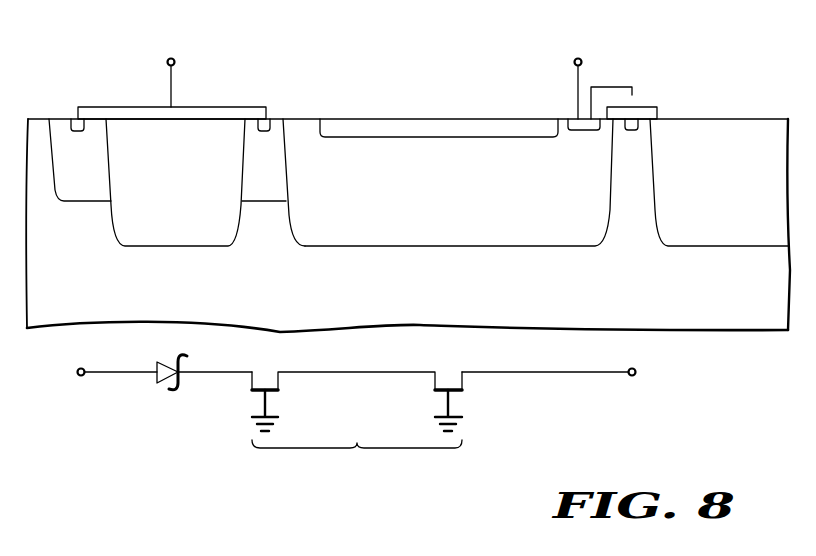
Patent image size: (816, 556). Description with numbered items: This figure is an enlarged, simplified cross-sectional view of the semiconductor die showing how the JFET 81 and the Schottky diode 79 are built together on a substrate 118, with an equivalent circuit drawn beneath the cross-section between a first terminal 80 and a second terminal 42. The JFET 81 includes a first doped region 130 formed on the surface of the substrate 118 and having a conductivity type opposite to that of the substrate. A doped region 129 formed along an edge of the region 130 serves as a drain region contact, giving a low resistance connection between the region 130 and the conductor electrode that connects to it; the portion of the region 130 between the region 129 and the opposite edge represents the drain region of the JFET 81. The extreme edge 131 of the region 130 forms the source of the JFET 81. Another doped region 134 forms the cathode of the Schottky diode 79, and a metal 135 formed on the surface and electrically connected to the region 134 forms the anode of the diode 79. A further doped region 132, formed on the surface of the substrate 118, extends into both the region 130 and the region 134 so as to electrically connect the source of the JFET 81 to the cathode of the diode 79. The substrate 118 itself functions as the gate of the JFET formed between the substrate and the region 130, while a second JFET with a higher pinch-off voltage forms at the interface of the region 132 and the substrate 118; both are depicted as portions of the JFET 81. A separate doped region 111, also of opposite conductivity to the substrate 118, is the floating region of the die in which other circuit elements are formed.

The second terminal 42 is at (578, 58).
The Schottky diode 79 is at (163, 387).
The first terminal 80 is at (170, 58).
The JFET 81 is at (357, 427).
The doped region 111 is at (712, 194).
The substrate 118 is at (432, 296).
The doped region 129 is at (585, 131).
The first doped region 130 is at (432, 200).
The extreme edge 131 is at (289, 180).
The doped region 132 is at (84, 203).
The doped region 134 is at (161, 200).
The metal 135 is at (226, 107).